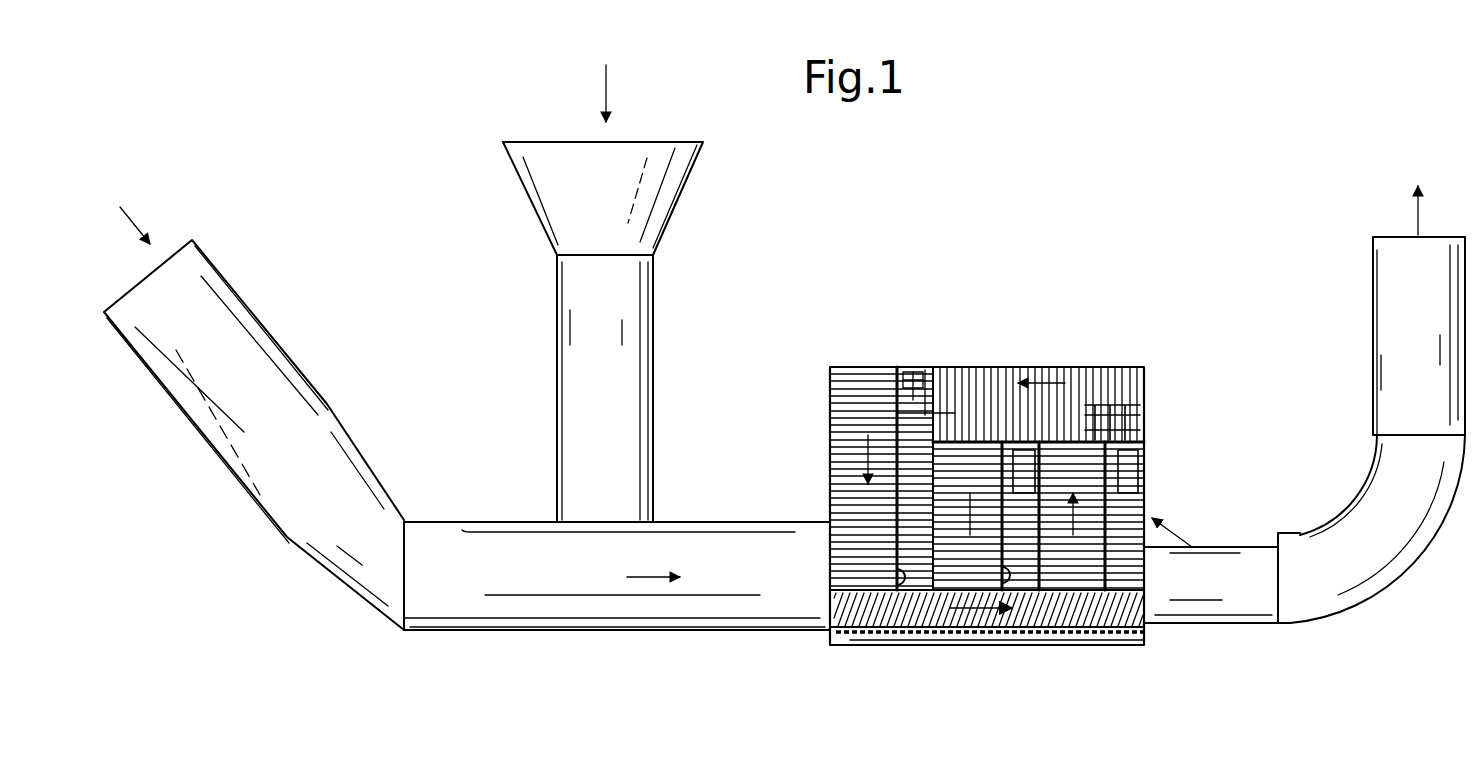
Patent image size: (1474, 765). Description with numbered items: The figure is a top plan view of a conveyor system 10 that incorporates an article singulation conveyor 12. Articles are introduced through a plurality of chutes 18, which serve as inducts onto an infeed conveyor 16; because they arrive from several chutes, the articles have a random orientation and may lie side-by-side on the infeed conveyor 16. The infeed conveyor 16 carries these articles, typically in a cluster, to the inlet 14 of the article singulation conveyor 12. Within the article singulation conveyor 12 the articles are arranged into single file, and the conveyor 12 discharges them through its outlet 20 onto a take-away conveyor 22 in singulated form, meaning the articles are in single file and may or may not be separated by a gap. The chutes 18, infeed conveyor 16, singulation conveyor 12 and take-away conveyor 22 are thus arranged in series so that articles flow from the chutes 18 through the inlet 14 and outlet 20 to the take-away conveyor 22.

The conveyor system 10 is at (862, 267).
The article singulation conveyor 12 is at (998, 365).
The inlet 14 is at (828, 522).
The infeed conveyor 16 is at (670, 520).
The chutes 18 is at (351, 439).
The outlet 20 is at (1147, 627).
The take-away conveyor 22 is at (1245, 545).